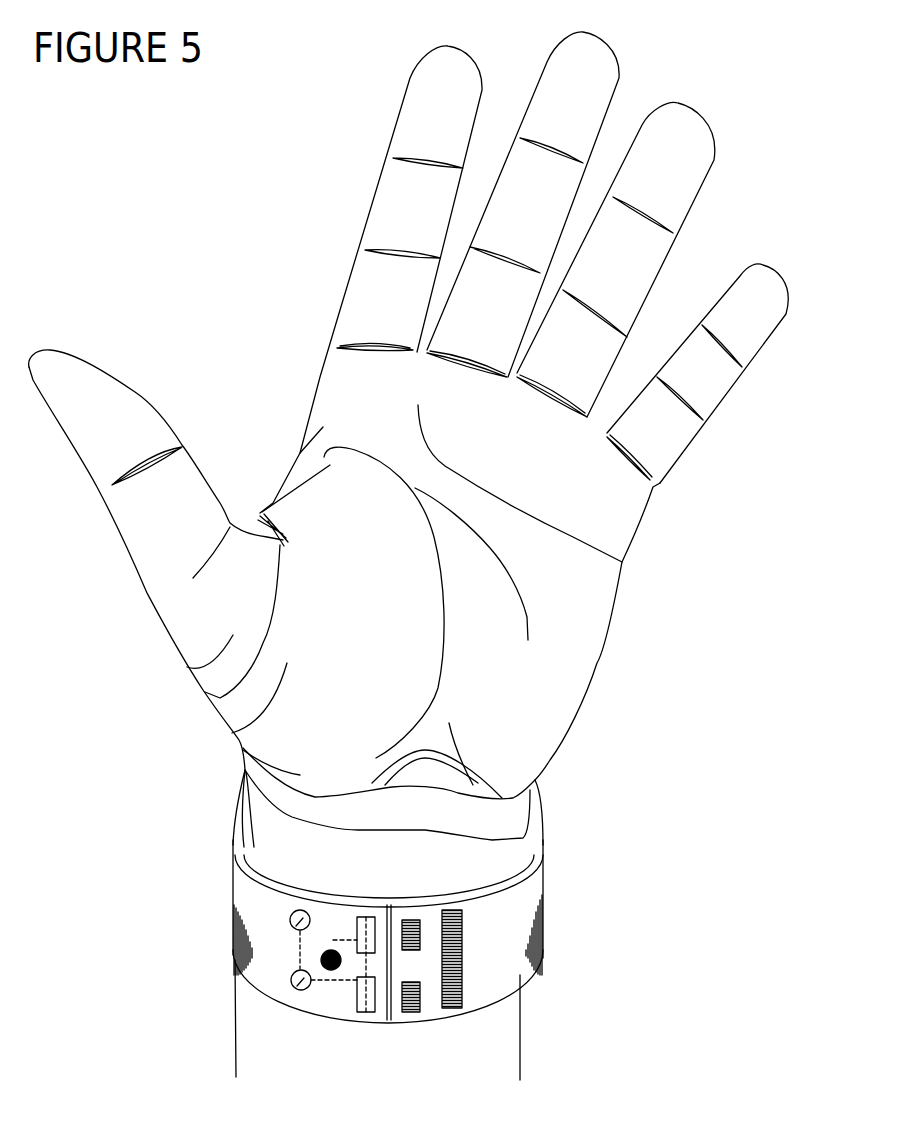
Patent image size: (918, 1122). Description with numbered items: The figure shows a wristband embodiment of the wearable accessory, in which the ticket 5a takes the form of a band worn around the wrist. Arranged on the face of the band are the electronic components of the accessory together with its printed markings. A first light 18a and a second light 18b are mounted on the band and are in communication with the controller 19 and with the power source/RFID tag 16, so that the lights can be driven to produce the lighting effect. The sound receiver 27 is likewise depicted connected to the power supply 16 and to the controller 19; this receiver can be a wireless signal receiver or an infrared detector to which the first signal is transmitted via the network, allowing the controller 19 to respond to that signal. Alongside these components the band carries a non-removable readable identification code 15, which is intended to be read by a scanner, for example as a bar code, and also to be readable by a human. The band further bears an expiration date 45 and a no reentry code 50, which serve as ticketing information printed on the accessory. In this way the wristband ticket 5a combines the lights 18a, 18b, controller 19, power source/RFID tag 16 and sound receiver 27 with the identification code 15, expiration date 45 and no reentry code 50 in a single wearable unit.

The ticket 5a is at (565, 880).
The readable identification code 15 is at (453, 1009).
The power source/RFID tag 16 is at (366, 916).
The first light 18a is at (300, 910).
The second light 18b is at (300, 990).
The controller 19 is at (366, 1013).
The sound receiver 27 is at (323, 972).
The expiration date 45 is at (410, 919).
The no reentry code 50 is at (412, 1013).